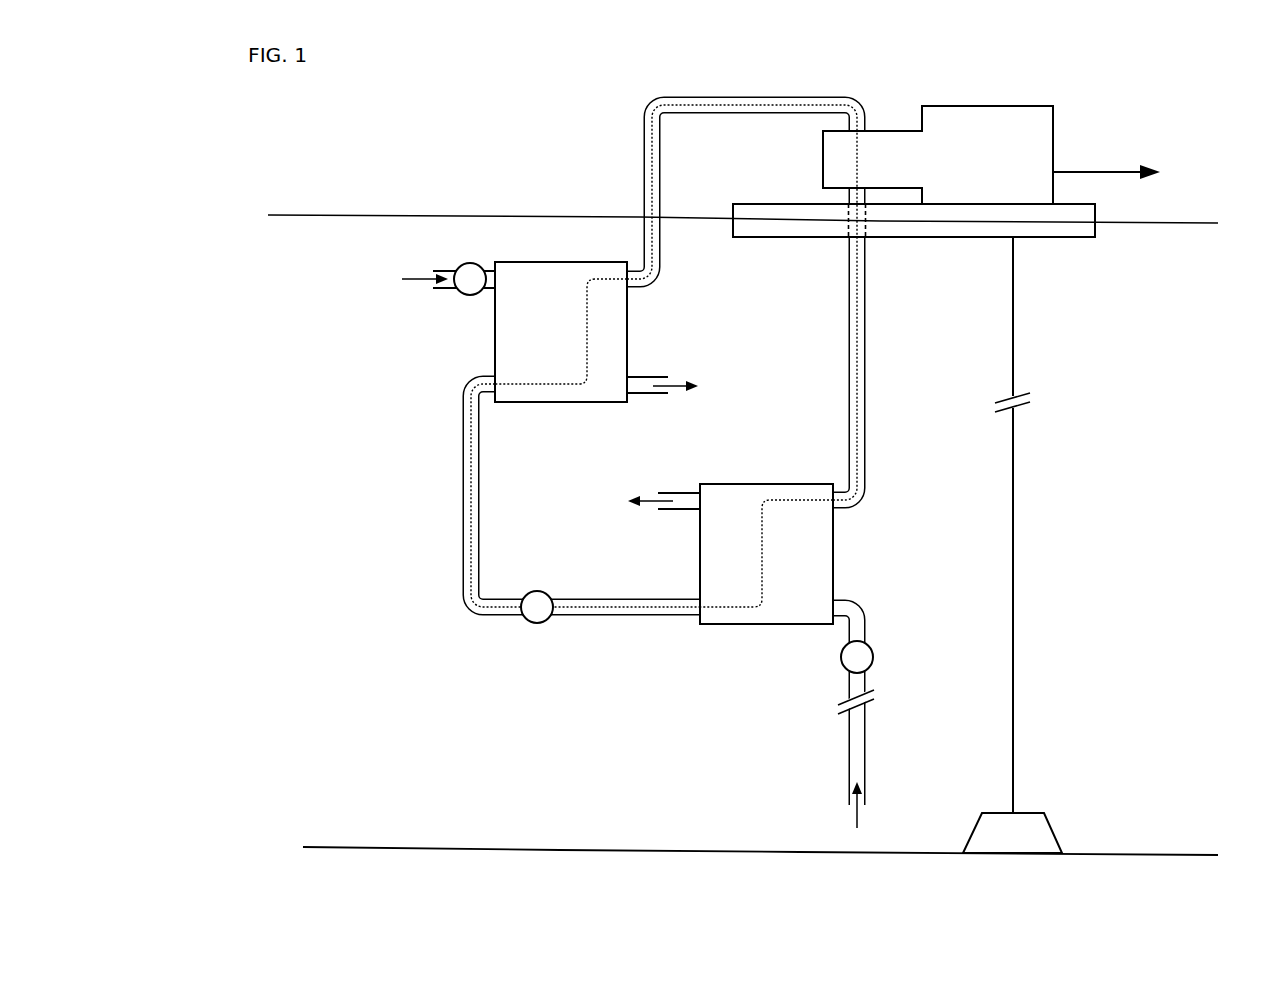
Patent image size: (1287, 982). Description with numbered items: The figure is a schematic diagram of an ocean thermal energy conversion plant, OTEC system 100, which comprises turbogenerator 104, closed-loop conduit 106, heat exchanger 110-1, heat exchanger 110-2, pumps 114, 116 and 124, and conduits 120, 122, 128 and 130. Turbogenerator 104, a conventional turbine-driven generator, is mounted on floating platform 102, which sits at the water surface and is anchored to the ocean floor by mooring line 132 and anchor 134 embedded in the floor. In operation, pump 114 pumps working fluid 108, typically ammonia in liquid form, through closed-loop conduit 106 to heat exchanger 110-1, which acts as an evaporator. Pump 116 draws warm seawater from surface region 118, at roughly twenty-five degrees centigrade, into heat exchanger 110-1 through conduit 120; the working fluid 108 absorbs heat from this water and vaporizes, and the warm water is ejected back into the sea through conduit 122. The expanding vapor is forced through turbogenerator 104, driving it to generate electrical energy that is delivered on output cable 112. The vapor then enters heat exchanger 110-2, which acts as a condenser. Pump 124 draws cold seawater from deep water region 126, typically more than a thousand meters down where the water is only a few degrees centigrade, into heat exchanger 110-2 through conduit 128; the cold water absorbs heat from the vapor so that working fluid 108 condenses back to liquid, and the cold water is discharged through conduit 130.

The OTEC system 100 is at (458, 97).
The floating platform 102 is at (963, 240).
The turbogenerator 104 is at (997, 105).
The closed-loop conduit 106 is at (458, 400).
The working fluid 108 is at (465, 432).
The heat exchanger 110-1 is at (560, 321).
The heat exchanger 110-2 is at (823, 583).
The output cable 112 is at (1093, 168).
The pump 114 is at (537, 590).
The pump 116 is at (487, 243).
The surface region 118 is at (407, 249).
The conduit 120 is at (445, 290).
The conduit 122 is at (650, 376).
The pump 124 is at (874, 657).
The deep water region 126 is at (720, 798).
The conduit 128 is at (866, 730).
The conduit 130 is at (676, 510).
The mooring line 132 is at (1013, 600).
The anchor 134 is at (1050, 822).